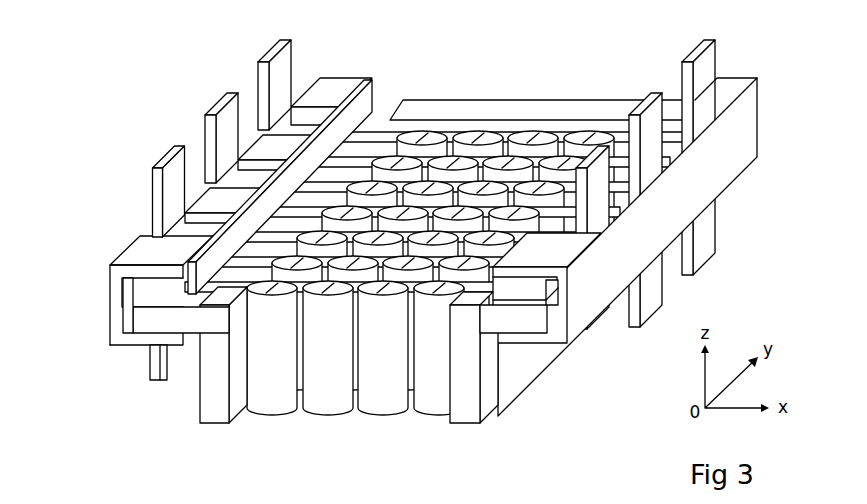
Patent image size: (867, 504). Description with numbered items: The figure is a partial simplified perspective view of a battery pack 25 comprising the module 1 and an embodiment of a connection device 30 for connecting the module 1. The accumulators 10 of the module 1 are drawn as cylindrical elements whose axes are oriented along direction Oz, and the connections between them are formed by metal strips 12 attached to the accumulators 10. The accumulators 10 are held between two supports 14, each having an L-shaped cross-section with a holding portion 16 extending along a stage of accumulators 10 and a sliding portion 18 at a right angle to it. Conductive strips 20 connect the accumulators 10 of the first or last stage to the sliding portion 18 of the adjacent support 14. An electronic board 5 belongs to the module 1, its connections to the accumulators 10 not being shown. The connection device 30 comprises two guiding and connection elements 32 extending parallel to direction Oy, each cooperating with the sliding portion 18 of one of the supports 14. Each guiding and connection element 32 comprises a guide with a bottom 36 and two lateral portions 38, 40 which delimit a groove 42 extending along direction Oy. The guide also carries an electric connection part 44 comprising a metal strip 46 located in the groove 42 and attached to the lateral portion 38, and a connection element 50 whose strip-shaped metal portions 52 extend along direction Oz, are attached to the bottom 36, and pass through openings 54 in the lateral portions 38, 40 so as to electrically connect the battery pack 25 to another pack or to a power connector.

The module 1 is at (440, 301).
The electronic board 5 is at (608, 110).
The accumulators 10 is at (258, 406).
The metal strips 12 is at (345, 290).
The supports 14 is at (382, 378).
The holding portion 16 is at (207, 388).
The sliding portion 18 is at (193, 322).
The conductive strips 20 is at (222, 288).
The battery pack 25 is at (440, 241).
The connection device 30 is at (724, 197).
The guiding and connection element 32 is at (141, 298).
The bottom 36 is at (118, 318).
The lateral portion 38 is at (137, 247).
The lateral portion 40 is at (132, 340).
The groove 42 is at (138, 302).
The electric connection part 44 is at (378, 96).
The metal strip 46 is at (160, 350).
The connection element 50 is at (256, 127).
The metal portions 52 is at (258, 66).
The openings 54 is at (317, 112).